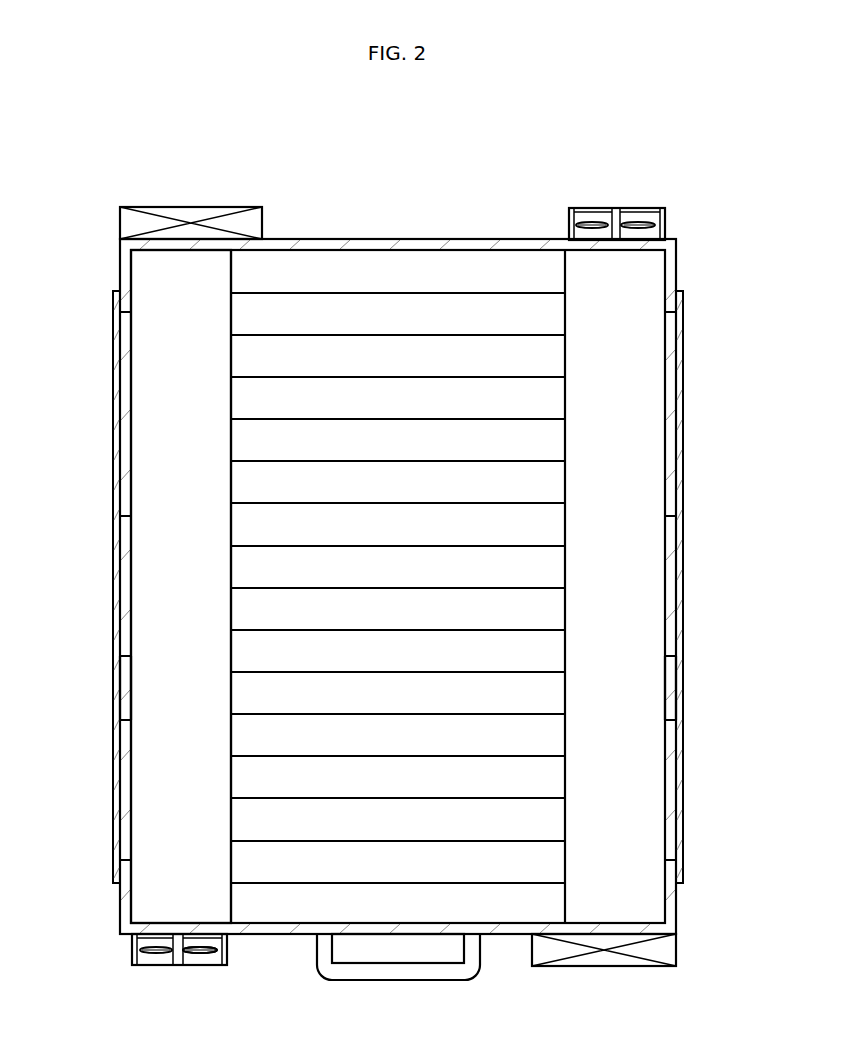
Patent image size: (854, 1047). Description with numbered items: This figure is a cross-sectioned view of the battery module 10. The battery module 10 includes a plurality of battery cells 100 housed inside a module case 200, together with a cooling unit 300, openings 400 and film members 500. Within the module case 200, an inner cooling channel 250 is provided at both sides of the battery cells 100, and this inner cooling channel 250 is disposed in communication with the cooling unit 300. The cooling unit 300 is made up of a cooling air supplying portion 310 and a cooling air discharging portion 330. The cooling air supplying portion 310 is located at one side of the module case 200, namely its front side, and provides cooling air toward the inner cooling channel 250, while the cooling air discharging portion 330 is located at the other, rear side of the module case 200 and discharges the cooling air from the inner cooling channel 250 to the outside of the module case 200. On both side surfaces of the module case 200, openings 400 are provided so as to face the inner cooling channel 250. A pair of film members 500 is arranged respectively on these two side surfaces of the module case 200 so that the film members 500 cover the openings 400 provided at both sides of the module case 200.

The battery module 10 is at (108, 158).
The battery cell 100 is at (571, 353).
The module case 200 is at (352, 238).
The inner cooling channel 250 is at (175, 280).
The cooling unit 300 is at (149, 979).
The cooling air supplying portion 310 is at (178, 968).
The cooling air discharging portion 330 is at (617, 208).
The opening 400 is at (120, 583).
The film member 500 is at (118, 686).